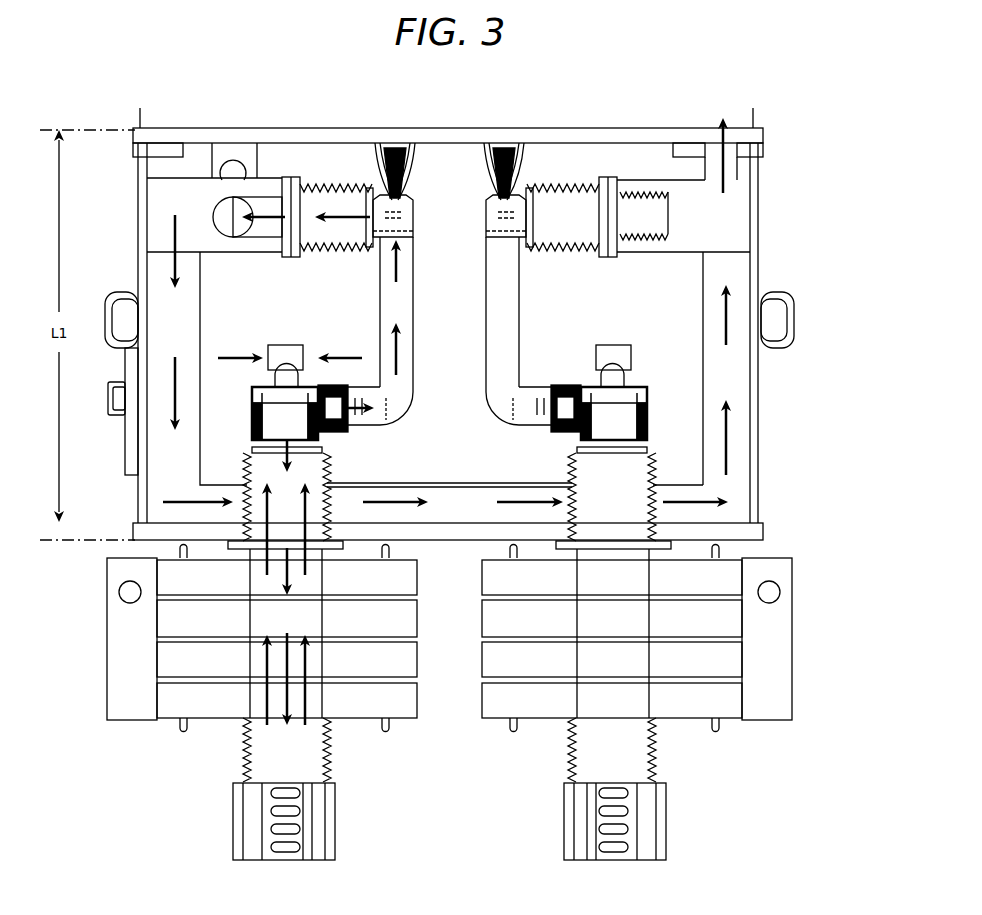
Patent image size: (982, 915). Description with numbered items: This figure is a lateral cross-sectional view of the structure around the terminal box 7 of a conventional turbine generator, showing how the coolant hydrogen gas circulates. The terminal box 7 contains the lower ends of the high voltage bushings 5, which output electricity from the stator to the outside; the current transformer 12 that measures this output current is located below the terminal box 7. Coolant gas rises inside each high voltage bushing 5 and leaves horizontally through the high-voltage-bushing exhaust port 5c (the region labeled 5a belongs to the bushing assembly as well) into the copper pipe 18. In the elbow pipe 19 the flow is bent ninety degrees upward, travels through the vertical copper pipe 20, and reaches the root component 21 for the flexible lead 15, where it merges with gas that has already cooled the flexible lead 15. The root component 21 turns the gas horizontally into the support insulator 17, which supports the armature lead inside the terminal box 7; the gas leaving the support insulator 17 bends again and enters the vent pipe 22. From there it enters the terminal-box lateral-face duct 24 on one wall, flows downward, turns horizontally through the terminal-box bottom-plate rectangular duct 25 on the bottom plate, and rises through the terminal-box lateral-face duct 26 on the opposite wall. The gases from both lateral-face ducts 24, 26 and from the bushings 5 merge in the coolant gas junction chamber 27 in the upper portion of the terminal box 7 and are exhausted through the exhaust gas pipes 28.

The high voltage bushing 5 is at (335, 820).
The connection port 5a is at (300, 350).
The high-voltage-bushing exhaust port 5c is at (335, 432).
The terminal box 7 is at (758, 455).
The current transformer 12 is at (403, 720).
The flexible lead 15 is at (412, 148).
The support insulator 17 is at (320, 232).
The copper pipe 18 is at (370, 420).
The elbow pipe 19 is at (408, 398).
The copper pipe 20 is at (405, 272).
The root component 21 is at (405, 222).
The vent pipe 22 is at (240, 225).
The terminal-box lateral-face duct 24 is at (195, 305).
The terminal-box bottom-plate rectangular duct 25 is at (462, 492).
The terminal-box lateral-face duct 26 is at (740, 285).
The coolant gas junction chamber 27 is at (740, 225).
The exhaust gas pipes 28 is at (745, 142).